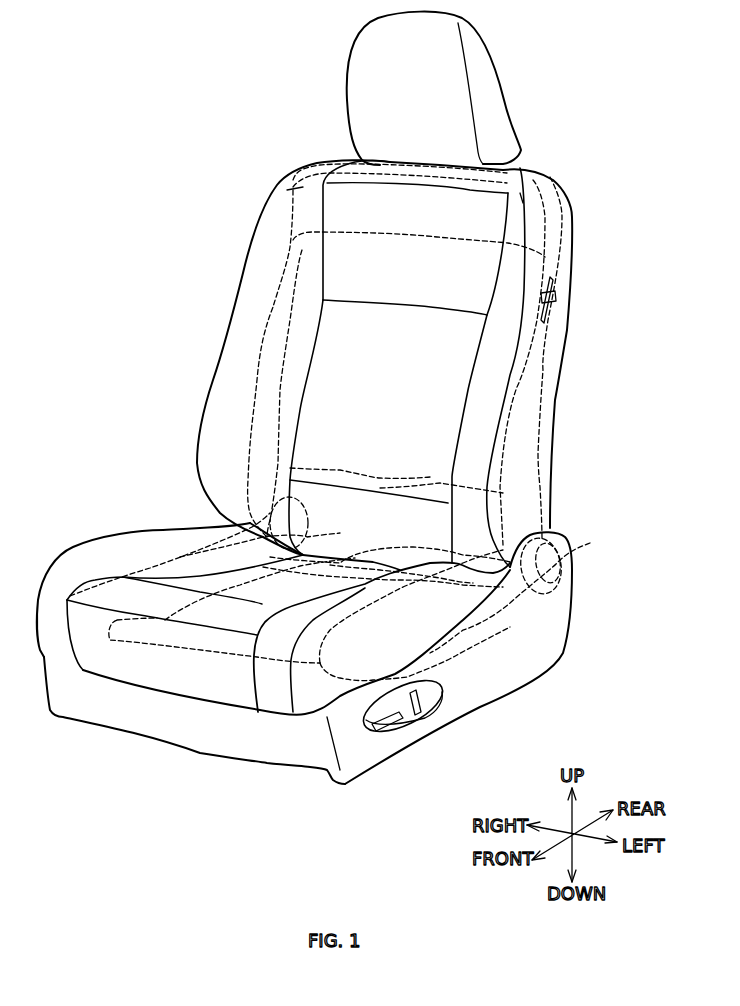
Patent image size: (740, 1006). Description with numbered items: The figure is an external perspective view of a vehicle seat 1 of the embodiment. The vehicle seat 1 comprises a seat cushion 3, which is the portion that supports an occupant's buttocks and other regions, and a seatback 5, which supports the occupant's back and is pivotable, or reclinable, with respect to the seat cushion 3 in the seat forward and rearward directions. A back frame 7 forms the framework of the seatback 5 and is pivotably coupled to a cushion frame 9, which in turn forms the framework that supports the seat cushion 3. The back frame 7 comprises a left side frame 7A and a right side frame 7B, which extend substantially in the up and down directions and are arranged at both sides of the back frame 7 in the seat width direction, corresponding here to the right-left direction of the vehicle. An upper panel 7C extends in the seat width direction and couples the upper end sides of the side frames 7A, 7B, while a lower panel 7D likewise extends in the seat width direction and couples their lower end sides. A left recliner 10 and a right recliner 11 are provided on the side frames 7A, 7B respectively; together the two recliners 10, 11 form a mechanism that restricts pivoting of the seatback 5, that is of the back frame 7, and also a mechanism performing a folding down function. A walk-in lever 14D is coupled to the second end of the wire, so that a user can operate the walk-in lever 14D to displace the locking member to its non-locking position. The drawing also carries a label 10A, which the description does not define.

The vehicle seat 1 is at (220, 158).
The seat cushion 3 is at (170, 552).
The seatback 5 is at (277, 212).
The back frame 7 is at (537, 187).
The left side frame 7A is at (545, 346).
The right side frame 7B is at (270, 337).
The upper panel 7C is at (497, 172).
The lower panel 7D is at (430, 477).
The cushion frame 9 is at (333, 673).
The left recliner 10 is at (548, 565).
The seat switch 10A is at (440, 703).
The right recliner 11 is at (297, 547).
The walk-in lever 14D is at (557, 288).